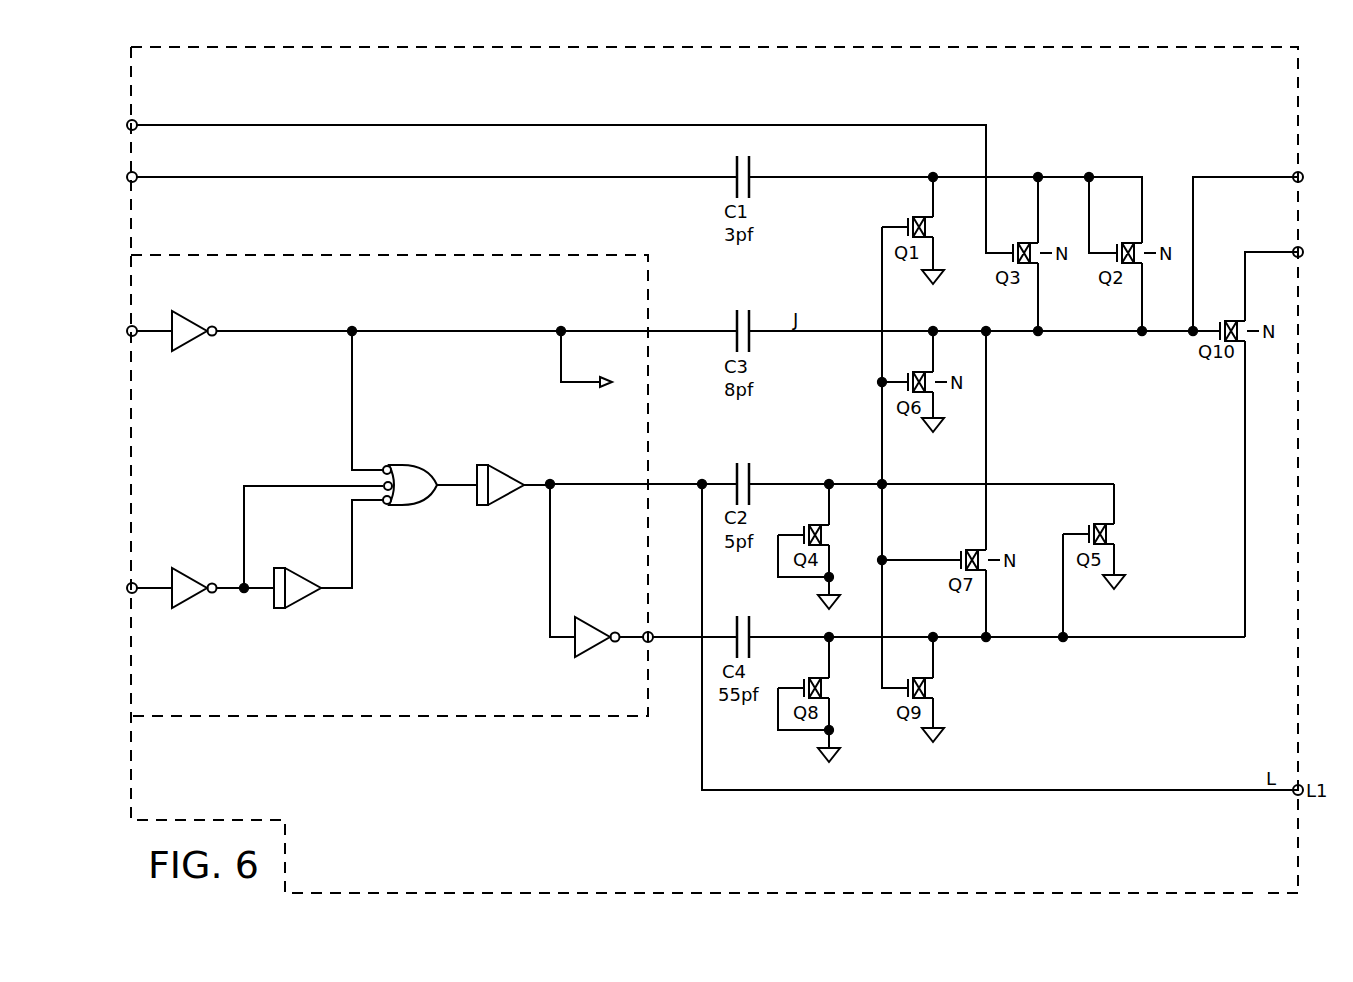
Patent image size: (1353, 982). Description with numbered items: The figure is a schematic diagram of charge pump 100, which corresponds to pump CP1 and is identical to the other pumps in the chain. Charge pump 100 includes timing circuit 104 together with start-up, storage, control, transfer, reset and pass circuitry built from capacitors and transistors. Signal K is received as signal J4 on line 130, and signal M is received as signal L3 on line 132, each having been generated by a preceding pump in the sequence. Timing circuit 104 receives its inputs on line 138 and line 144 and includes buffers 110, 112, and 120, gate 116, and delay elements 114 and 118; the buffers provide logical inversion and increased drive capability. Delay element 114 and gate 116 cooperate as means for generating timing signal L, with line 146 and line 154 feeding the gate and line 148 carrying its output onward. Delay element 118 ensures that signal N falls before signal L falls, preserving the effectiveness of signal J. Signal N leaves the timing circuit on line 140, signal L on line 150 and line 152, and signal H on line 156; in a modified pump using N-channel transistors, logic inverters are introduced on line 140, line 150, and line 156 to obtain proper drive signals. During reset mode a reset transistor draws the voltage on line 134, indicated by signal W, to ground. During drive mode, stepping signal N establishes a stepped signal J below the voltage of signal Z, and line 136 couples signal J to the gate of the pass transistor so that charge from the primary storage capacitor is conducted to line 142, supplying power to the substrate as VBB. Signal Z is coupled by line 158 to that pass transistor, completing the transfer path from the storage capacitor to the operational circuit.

The charge pump 100 is at (714, 470).
The timing circuit 104 is at (389, 485).
The buffer 110 is at (198, 325).
The buffer 112 is at (197, 600).
The delay element 114 is at (311, 600).
The gate 116 is at (422, 466).
The delay element 118 is at (505, 466).
The buffer 120 is at (599, 657).
The line 130 is at (301, 124).
The line 132 is at (301, 176).
The line 134 is at (966, 176).
The line 136 is at (1233, 176).
The line 138 is at (152, 334).
The line 140 is at (404, 331).
The line 142 is at (1242, 263).
The line 144 is at (152, 591).
The line 146 is at (289, 486).
The line 148 is at (456, 490).
The line 150 is at (617, 483).
The line 152 is at (858, 484).
The line 154 is at (352, 536).
The line 156 is at (634, 637).
The line 158 is at (1157, 637).